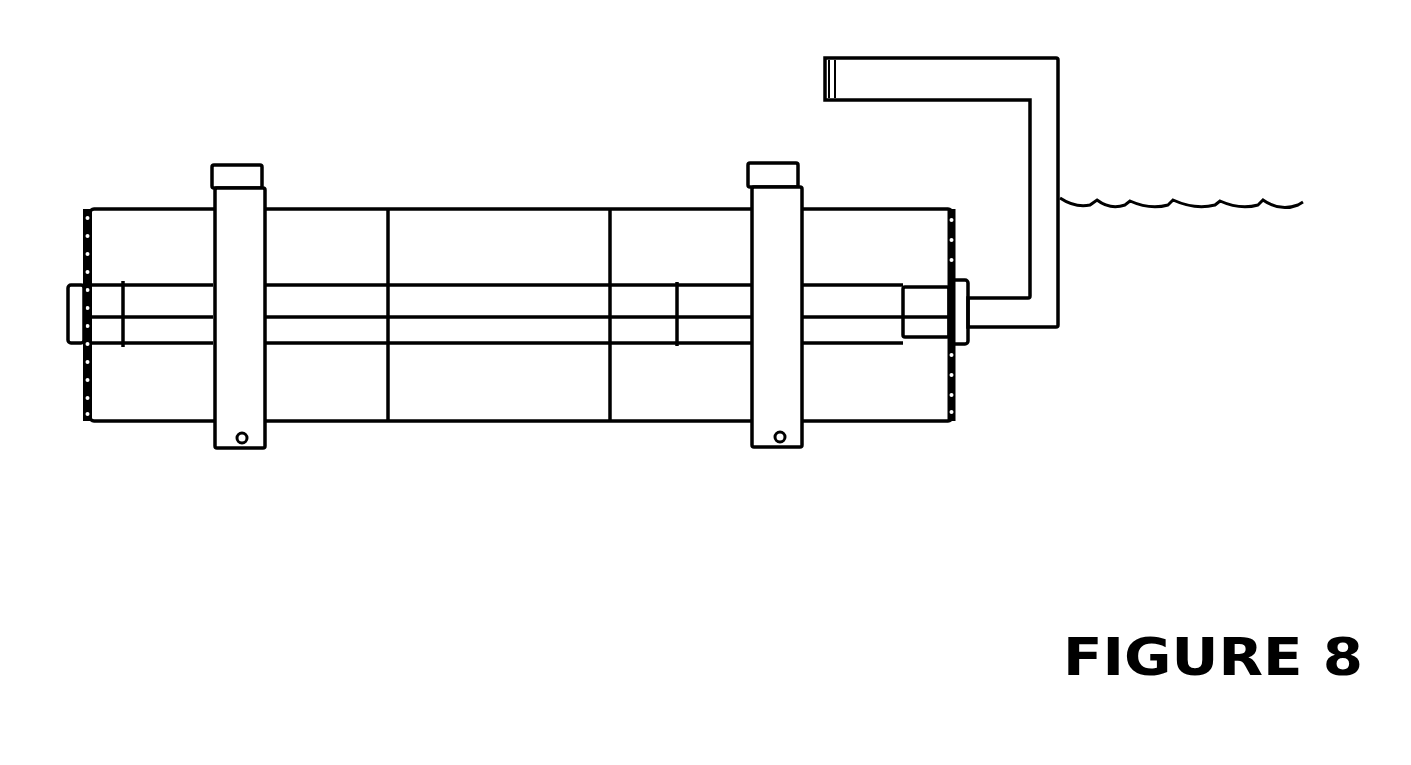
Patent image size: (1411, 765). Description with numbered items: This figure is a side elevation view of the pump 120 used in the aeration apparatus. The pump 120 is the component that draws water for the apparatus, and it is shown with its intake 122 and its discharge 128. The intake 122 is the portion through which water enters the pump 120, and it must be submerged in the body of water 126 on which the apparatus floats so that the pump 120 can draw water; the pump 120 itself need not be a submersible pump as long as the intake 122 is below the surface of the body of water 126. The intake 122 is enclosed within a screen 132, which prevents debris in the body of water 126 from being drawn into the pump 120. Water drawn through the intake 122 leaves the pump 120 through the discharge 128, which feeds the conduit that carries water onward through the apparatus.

The pump 120 is at (550, 343).
The intake 122 is at (460, 327).
The body of water 126 is at (1222, 208).
The discharge 128 is at (1060, 140).
The screen 132 is at (468, 421).